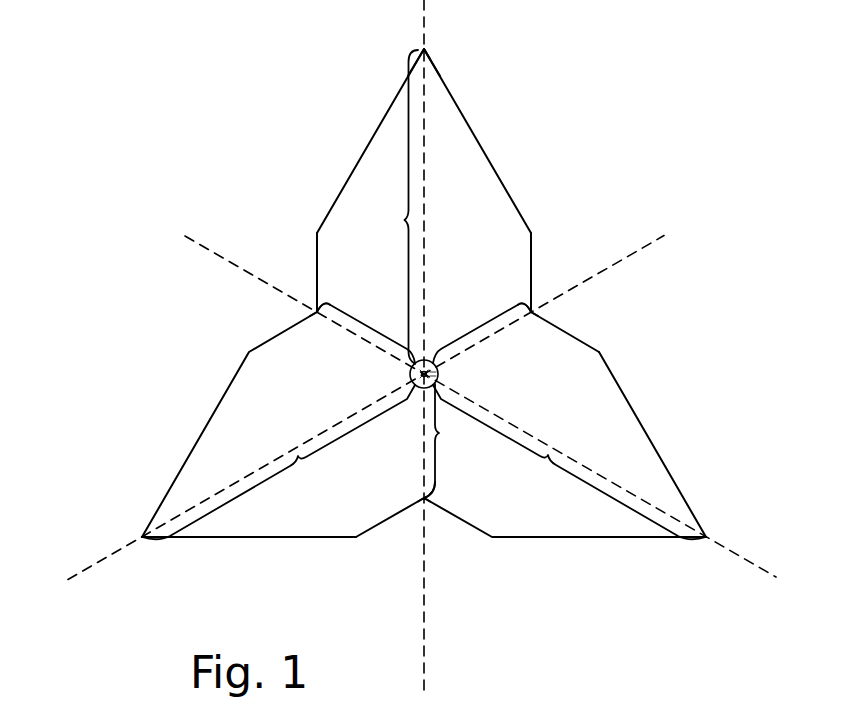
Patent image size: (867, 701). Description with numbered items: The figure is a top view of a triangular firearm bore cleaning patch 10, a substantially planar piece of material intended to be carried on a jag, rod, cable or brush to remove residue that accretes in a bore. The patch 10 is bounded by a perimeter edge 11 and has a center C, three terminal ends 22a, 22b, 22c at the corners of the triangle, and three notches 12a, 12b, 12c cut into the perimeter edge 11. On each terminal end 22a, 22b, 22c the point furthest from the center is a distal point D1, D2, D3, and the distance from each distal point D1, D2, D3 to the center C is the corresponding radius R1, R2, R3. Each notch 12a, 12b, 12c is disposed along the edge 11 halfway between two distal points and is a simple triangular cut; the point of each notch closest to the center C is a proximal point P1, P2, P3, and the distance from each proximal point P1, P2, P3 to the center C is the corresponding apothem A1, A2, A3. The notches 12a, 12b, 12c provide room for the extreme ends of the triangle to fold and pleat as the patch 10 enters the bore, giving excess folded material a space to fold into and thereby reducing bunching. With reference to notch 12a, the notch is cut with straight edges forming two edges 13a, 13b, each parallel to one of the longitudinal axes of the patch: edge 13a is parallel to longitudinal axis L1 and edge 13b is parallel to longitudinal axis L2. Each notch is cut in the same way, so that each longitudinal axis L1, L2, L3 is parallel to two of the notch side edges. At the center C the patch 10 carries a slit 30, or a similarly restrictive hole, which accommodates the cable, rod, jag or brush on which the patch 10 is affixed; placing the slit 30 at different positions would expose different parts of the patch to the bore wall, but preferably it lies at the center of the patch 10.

The patch 10 is at (601, 69).
The perimeter edge 11 is at (481, 142).
The notch 12a is at (560, 309).
The notch 12b is at (413, 513).
The notch 12c is at (300, 311).
The edge 13a is at (532, 242).
The edge 13b is at (585, 340).
The terminal end 22a is at (434, 63).
The terminal end 22b is at (677, 483).
The terminal end 22c is at (208, 538).
The slit 30 is at (410, 372).
The center C is at (440, 376).
The distal point D1 is at (422, 48).
The distal point D2 is at (706, 540).
The distal point D3 is at (140, 536).
The proximal point P1 is at (534, 305).
The proximal point P2 is at (427, 503).
The proximal point P3 is at (318, 303).
The radius R1 is at (394, 207).
The radius R2 is at (569, 462).
The radius R3 is at (278, 462).
The apothem A1 is at (486, 324).
The apothem A2 is at (449, 441).
The apothem A3 is at (378, 328).
The longitudinal axis L1 is at (455, 0).
The longitudinal axis L2 is at (745, 557).
The longitudinal axis L3 is at (85, 566).